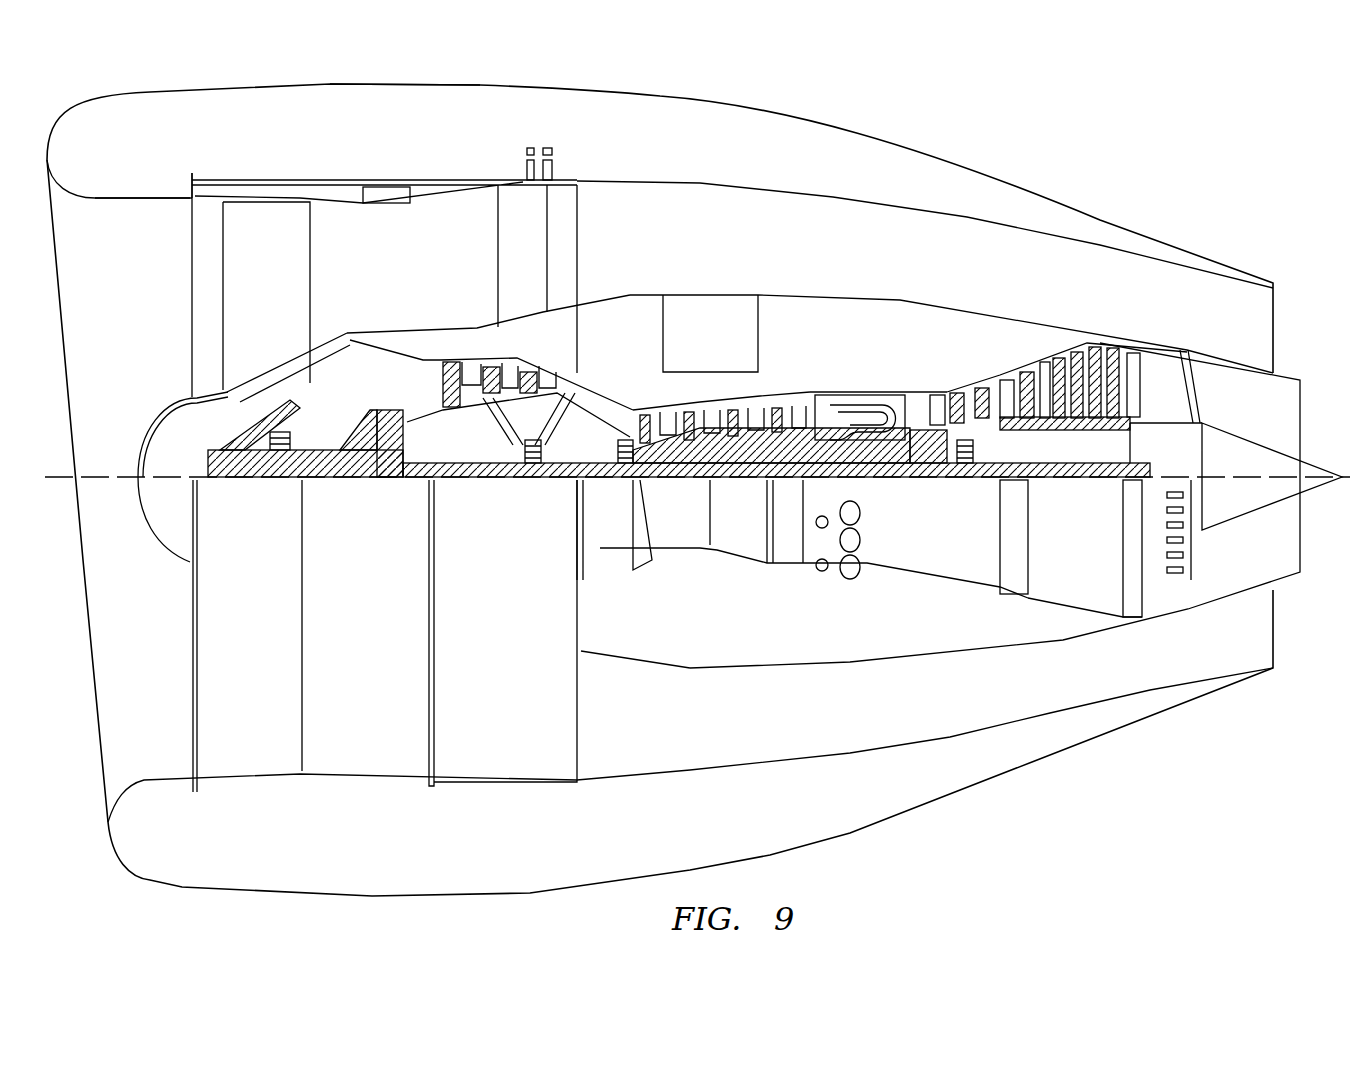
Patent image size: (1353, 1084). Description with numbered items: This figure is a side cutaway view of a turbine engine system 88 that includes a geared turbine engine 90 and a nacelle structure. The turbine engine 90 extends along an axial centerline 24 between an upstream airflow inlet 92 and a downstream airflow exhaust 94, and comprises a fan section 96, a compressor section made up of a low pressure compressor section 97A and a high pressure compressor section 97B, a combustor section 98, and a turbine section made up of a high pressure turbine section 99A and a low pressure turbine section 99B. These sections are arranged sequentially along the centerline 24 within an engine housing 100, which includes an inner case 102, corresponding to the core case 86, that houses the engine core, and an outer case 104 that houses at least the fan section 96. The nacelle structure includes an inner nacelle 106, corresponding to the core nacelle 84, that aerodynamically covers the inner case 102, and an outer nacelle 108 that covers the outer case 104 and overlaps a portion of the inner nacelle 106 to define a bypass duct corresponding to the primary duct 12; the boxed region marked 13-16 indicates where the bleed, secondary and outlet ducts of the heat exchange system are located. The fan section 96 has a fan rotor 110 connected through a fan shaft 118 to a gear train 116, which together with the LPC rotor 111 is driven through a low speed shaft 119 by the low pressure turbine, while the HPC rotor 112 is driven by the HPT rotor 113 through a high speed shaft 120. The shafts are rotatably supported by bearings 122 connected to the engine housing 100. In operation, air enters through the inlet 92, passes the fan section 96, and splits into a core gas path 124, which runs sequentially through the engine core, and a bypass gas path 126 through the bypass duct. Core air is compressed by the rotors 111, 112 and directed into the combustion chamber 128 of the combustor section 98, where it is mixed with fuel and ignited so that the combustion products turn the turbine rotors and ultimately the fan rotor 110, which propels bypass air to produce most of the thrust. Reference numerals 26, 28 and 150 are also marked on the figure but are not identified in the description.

The primary duct 12 is at (390, 275).
The bleed duct, secondary ducts and outlet duct 13-16 is at (672, 350).
The axial centerline 24 is at (1247, 480).
The fan section 26 is at (348, 250).
The exhaust nozzle 28 is at (1275, 320).
The core nacelle 84 is at (805, 295).
The core case 86 is at (785, 388).
The turbine engine system 88 is at (1167, 182).
The geared turbine engine 90 is at (159, 670).
The upstream airflow inlet 92 is at (190, 250).
The downstream airflow exhaust 94 is at (1200, 373).
The fan section 96 is at (266, 192).
The low pressure compressor section 97A is at (477, 357).
The high pressure compressor section 97B is at (768, 390).
The combustor section 98 is at (892, 382).
The high pressure turbine section 99A is at (947, 380).
The low pressure turbine section 99B is at (1097, 340).
The engine housing 100 is at (604, 592).
The inner case 102 is at (789, 563).
The outer case 104 is at (536, 784).
The inner nacelle 106 is at (736, 668).
The outer nacelle 108 is at (661, 98).
The fan rotor 110 is at (217, 407).
The LPC rotor 111 is at (490, 430).
The HPC rotor 112 is at (735, 450).
The HPT rotor 113 is at (933, 447).
The gear train 116 is at (388, 456).
The fan shaft 118 is at (257, 470).
The low speed shaft 119 is at (1080, 478).
The high speed shaft 120 is at (873, 457).
The bearings 122 is at (270, 450).
The core gas path 124 is at (600, 405).
The bypass gas path 126 is at (618, 252).
The combustion chamber 128 is at (863, 413).
The turbine exhaust case 150 is at (1070, 420).